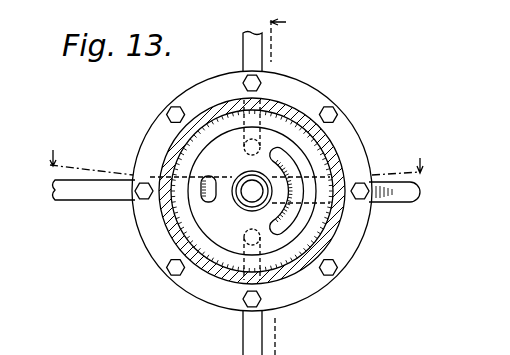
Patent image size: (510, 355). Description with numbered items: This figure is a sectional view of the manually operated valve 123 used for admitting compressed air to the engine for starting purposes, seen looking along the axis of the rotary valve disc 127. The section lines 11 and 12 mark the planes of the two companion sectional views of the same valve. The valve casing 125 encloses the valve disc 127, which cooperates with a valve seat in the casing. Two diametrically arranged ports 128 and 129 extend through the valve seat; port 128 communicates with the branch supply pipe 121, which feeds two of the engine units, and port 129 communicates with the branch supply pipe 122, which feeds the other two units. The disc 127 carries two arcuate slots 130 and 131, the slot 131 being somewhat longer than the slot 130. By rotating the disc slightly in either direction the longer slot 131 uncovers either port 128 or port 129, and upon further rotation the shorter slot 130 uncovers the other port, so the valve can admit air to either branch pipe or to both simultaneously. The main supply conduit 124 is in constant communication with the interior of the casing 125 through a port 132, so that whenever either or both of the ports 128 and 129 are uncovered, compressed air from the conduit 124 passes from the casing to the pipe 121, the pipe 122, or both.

The section line 11- 11 is at (237, 176).
The section line 12- 12 is at (274, 179).
The branch supply pipe 121 is at (236, 332).
The branch supply pipe 122 is at (255, 58).
The manually operated valve 123 is at (168, 108).
The main supply conduit 124 is at (80, 197).
The valve casing 125 is at (334, 228).
The rotary valve disc 127 is at (241, 200).
The port 128 is at (256, 241).
The port 129 is at (258, 143).
The arcuate slot 130 is at (205, 201).
The arcuate slot 131 is at (296, 174).
The port 132 is at (168, 165).